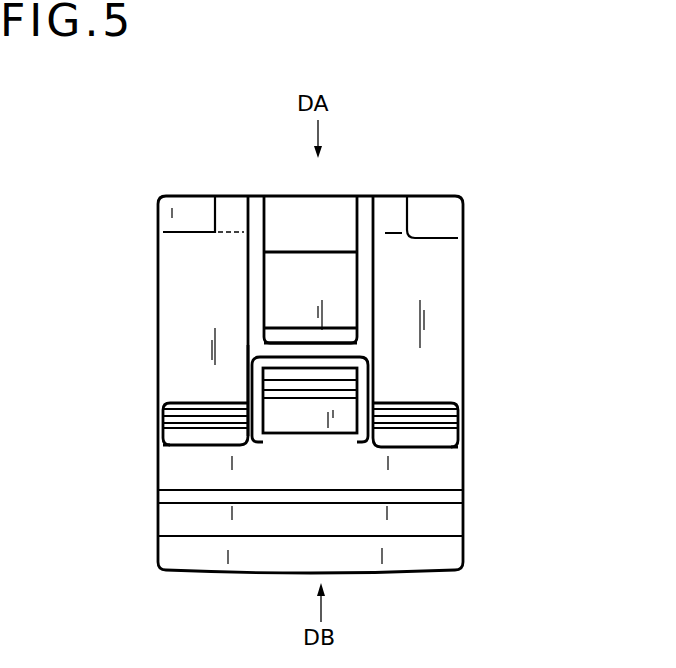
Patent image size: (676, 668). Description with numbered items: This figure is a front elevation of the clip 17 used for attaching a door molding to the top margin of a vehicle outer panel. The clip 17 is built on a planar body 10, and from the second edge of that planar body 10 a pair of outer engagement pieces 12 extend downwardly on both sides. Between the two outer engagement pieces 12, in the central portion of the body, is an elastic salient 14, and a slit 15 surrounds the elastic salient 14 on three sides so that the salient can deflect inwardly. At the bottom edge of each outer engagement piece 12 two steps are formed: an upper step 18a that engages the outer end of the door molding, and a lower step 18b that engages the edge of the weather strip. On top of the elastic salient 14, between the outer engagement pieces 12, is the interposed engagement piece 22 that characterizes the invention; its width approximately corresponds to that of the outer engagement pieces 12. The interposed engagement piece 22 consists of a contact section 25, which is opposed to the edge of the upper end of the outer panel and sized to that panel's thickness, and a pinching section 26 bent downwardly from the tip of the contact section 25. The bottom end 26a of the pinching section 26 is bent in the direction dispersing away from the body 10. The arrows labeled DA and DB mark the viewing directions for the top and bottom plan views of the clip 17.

The planar body 10 is at (160, 481).
The outer engagement pieces 12 is at (190, 337).
The elastic salient 14 is at (320, 396).
The slit 15 is at (250, 396).
The clip 17 is at (116, 218).
The upper step 18a is at (188, 403).
The lower step 18b is at (205, 405).
The interposed engagement piece 22 is at (544, 198).
The contact section 25 is at (333, 250).
The pinching section 26 is at (342, 296).
The bottom end 26a is at (278, 336).